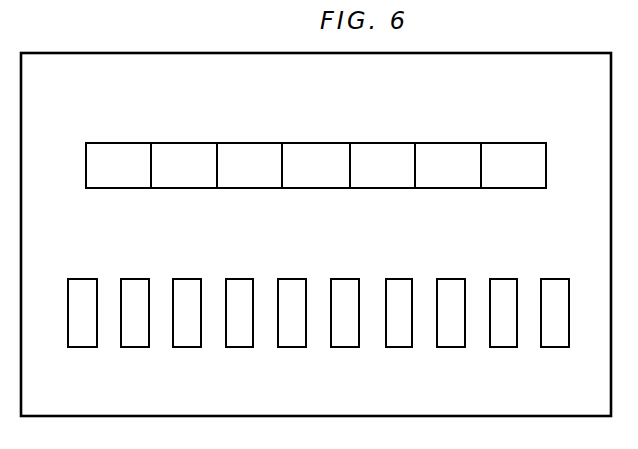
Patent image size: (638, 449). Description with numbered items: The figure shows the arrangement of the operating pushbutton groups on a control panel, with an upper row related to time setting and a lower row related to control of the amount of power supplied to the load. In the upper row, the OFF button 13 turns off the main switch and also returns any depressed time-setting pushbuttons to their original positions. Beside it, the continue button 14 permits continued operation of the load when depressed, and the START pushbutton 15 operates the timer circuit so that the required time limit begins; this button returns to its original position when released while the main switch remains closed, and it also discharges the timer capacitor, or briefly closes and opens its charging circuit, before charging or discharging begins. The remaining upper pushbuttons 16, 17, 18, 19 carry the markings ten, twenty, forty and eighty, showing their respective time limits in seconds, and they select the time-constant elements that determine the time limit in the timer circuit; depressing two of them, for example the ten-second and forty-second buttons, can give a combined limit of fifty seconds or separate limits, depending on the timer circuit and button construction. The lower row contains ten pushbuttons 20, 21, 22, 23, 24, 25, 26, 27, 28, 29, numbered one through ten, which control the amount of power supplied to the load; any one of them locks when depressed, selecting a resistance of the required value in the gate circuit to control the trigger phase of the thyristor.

The OFF button 13 is at (131, 143).
The continue button 14 is at (190, 143).
The START pushbutton 15 is at (248, 143).
The pushbutton 16 is at (315, 143).
The pushbutton 17 is at (382, 143).
The pushbutton 18 is at (450, 143).
The pushbutton 19 is at (514, 143).
The pushbutton 20 is at (83, 348).
The pushbutton 21 is at (135, 348).
The pushbutton 22 is at (187, 348).
The pushbutton 23 is at (239, 348).
The pushbutton 24 is at (292, 348).
The pushbutton 25 is at (345, 348).
The pushbutton 26 is at (399, 348).
The pushbutton 27 is at (451, 348).
The pushbutton 28 is at (503, 348).
The pushbutton 29 is at (555, 348).